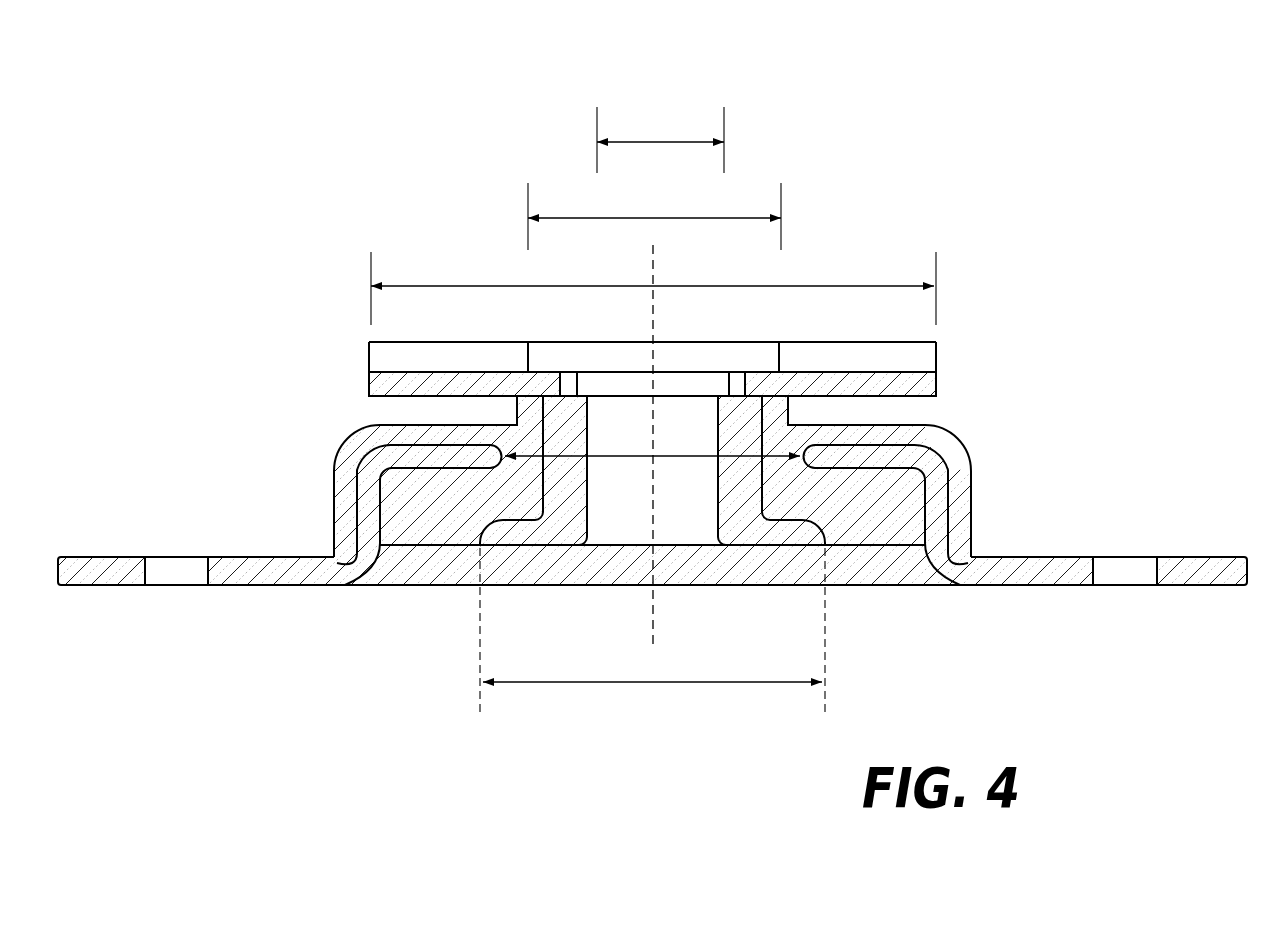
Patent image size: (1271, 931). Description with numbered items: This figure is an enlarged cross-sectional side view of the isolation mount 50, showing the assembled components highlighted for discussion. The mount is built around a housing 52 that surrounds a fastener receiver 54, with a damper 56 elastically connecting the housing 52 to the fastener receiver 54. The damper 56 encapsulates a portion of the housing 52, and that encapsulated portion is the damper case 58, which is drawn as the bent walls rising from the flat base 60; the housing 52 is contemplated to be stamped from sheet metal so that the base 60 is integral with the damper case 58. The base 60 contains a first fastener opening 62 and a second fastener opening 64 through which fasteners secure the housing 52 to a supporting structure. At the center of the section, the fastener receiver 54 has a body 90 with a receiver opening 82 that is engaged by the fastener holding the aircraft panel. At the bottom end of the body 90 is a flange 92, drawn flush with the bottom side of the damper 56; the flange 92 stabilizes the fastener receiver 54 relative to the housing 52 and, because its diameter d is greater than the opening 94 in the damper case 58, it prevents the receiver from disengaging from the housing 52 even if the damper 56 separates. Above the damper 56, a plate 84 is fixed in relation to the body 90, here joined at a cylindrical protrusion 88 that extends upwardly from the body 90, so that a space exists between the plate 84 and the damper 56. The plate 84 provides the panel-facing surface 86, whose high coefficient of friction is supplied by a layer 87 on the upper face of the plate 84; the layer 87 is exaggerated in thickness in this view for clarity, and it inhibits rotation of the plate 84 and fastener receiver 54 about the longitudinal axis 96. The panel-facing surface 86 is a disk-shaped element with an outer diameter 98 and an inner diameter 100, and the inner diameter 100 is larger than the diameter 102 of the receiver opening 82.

The isolation mount 50 is at (652, 410).
The housing 52 is at (1002, 553).
The fastener receiver 54 is at (761, 537).
The damper 56 is at (336, 462).
The damper case 58 is at (942, 502).
The base 60 is at (240, 585).
The first fastener opening 62 is at (172, 572).
The second fastener opening 64 is at (1126, 572).
The receiver opening 82 is at (628, 538).
The plate 84 is at (369, 385).
The panel-facing surface 86 is at (369, 340).
The layer 87 is at (369, 355).
The cylindrical protrusion 88 is at (572, 385).
The body 90 is at (565, 525).
The flange 92 is at (505, 536).
The opening 94 is at (687, 455).
The longitudinal axis 96 is at (655, 563).
The outer diameter 98 is at (838, 286).
The inner diameter 100 is at (713, 217).
The diameter of the receiver opening 102 is at (661, 141).
The diameter of the flange d is at (653, 684).